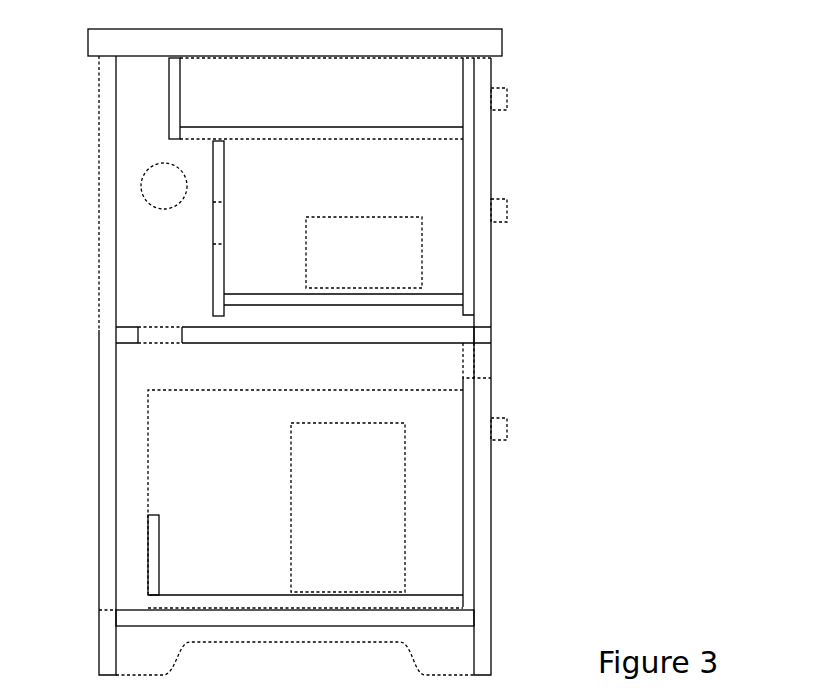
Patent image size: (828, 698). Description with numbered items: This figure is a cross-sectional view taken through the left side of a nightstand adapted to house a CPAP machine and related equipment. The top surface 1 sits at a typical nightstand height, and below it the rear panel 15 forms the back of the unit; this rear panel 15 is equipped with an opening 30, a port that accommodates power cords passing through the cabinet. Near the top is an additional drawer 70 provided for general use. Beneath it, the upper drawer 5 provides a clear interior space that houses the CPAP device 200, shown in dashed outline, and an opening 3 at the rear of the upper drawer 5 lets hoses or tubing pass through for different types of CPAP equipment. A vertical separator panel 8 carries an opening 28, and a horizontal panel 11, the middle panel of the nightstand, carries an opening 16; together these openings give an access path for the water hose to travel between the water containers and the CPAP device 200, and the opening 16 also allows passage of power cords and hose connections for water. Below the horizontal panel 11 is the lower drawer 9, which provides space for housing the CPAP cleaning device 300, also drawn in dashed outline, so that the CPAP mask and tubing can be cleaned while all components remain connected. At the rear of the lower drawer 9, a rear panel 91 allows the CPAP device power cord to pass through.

The top surface 1 is at (142, 31).
The opening 28 is at (155, 192).
The opening 30 is at (98, 310).
The rear panel 15 is at (99, 493).
The additional drawer 70 is at (470, 82).
The opening 3 is at (222, 226).
The upper drawer 5 is at (457, 278).
The CPAP device 200 is at (343, 268).
The vertical separator panel 8 is at (144, 295).
The horizontal panel 11 is at (490, 335).
The opening 16 is at (158, 338).
The lower drawer 9 is at (452, 540).
The CPAP cleaning device 300 is at (323, 527).
The rear panel 91 is at (160, 555).